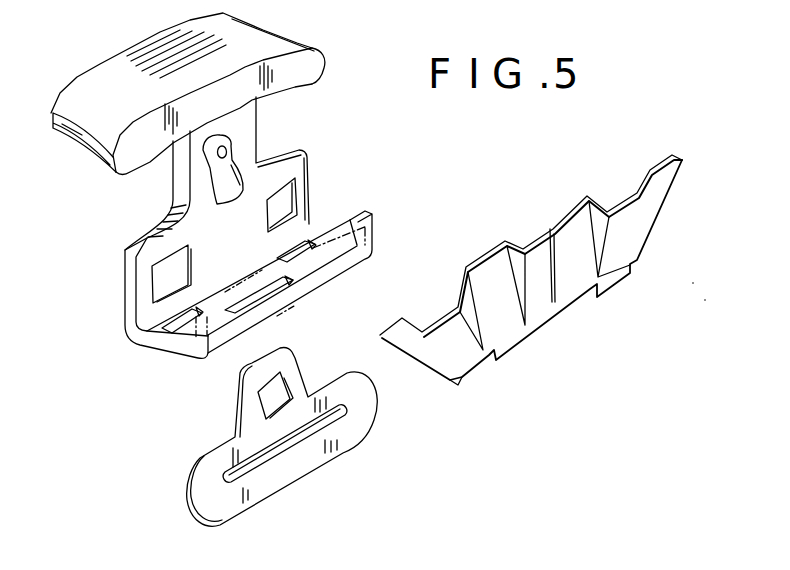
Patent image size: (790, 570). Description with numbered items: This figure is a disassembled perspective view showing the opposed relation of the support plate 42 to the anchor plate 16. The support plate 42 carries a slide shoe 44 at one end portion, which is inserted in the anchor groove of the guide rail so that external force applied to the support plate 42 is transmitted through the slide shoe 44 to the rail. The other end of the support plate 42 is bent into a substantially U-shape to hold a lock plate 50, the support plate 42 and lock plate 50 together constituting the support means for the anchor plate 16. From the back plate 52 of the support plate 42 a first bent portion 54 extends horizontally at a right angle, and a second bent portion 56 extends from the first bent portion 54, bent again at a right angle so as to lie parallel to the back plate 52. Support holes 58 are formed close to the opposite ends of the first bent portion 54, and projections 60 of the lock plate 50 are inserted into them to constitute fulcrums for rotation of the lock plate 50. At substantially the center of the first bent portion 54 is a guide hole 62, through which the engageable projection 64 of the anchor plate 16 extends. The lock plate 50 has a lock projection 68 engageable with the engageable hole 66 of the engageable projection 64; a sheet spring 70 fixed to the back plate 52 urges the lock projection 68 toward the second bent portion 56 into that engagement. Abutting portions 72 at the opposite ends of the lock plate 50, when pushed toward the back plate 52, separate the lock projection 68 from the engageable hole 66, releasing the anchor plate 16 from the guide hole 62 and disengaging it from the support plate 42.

The anchor plate 16 is at (282, 433).
The support plate 42 is at (241, 206).
The slide shoe 44 is at (302, 70).
The lock plate 50 is at (543, 289).
The back plate 52 is at (125, 287).
The first bent portion 54 is at (170, 350).
The second bent portion 56 is at (378, 243).
The support holes 58 is at (146, 337).
The projections 60 is at (485, 373).
The guide hole 62 is at (267, 290).
The engageable projection 64 is at (297, 362).
The engageable hole 66 is at (258, 398).
The lock projection 68 is at (538, 242).
The sheet spring 70 is at (236, 167).
The abutting portions 72 is at (407, 340).